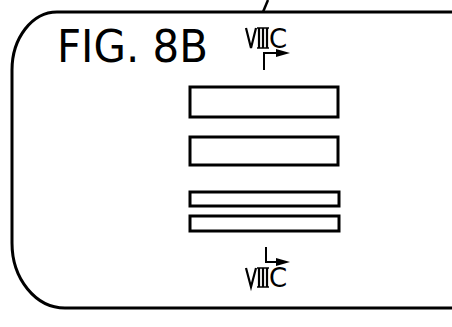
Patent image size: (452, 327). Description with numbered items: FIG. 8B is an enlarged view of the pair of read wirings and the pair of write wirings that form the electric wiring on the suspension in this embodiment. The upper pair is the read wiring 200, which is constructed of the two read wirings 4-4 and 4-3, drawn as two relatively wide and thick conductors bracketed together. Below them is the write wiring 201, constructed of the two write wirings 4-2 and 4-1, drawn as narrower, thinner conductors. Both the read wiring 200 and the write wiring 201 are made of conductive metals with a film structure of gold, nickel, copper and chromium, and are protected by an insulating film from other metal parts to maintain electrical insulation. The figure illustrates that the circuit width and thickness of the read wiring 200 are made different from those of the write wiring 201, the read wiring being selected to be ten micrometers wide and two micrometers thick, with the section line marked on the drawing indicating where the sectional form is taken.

The read wiring 200 is at (183, 85).
The write wiring 201 is at (183, 178).
The read wiring 4-4 is at (293, 104).
The read wiring 4-3 is at (293, 154).
The write wiring 4-2 is at (293, 200).
The write wiring 4-1 is at (293, 224).